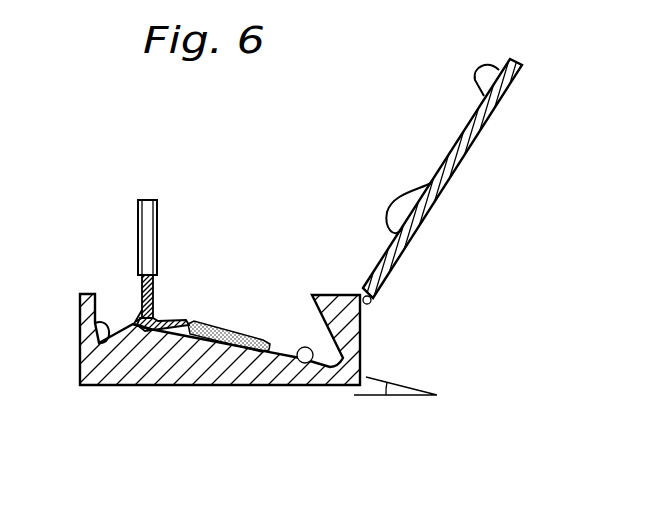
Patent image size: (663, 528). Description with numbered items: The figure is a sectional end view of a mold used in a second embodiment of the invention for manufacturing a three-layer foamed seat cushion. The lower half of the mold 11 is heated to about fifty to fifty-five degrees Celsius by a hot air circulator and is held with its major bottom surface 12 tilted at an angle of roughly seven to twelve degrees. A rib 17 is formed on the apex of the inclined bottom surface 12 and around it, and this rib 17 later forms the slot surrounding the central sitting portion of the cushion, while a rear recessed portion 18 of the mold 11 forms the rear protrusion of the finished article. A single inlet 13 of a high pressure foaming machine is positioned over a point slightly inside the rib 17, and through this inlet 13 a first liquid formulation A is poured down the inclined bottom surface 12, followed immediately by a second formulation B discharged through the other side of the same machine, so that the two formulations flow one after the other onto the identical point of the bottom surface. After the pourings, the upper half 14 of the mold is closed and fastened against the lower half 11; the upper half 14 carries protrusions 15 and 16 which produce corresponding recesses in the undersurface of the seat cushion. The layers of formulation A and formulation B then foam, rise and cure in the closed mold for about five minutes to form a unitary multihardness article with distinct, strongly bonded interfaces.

The mold 11 is at (362, 326).
The major bottom surface 12 is at (305, 363).
The inlet 13 is at (138, 216).
The upper half 14 is at (440, 193).
The protrusion 15 is at (393, 198).
The protrusion 16 is at (474, 78).
The rib 17 is at (138, 328).
The rear recessed portion 18 is at (82, 342).
The first liquid formulation A is at (238, 342).
The second formulation B is at (156, 301).